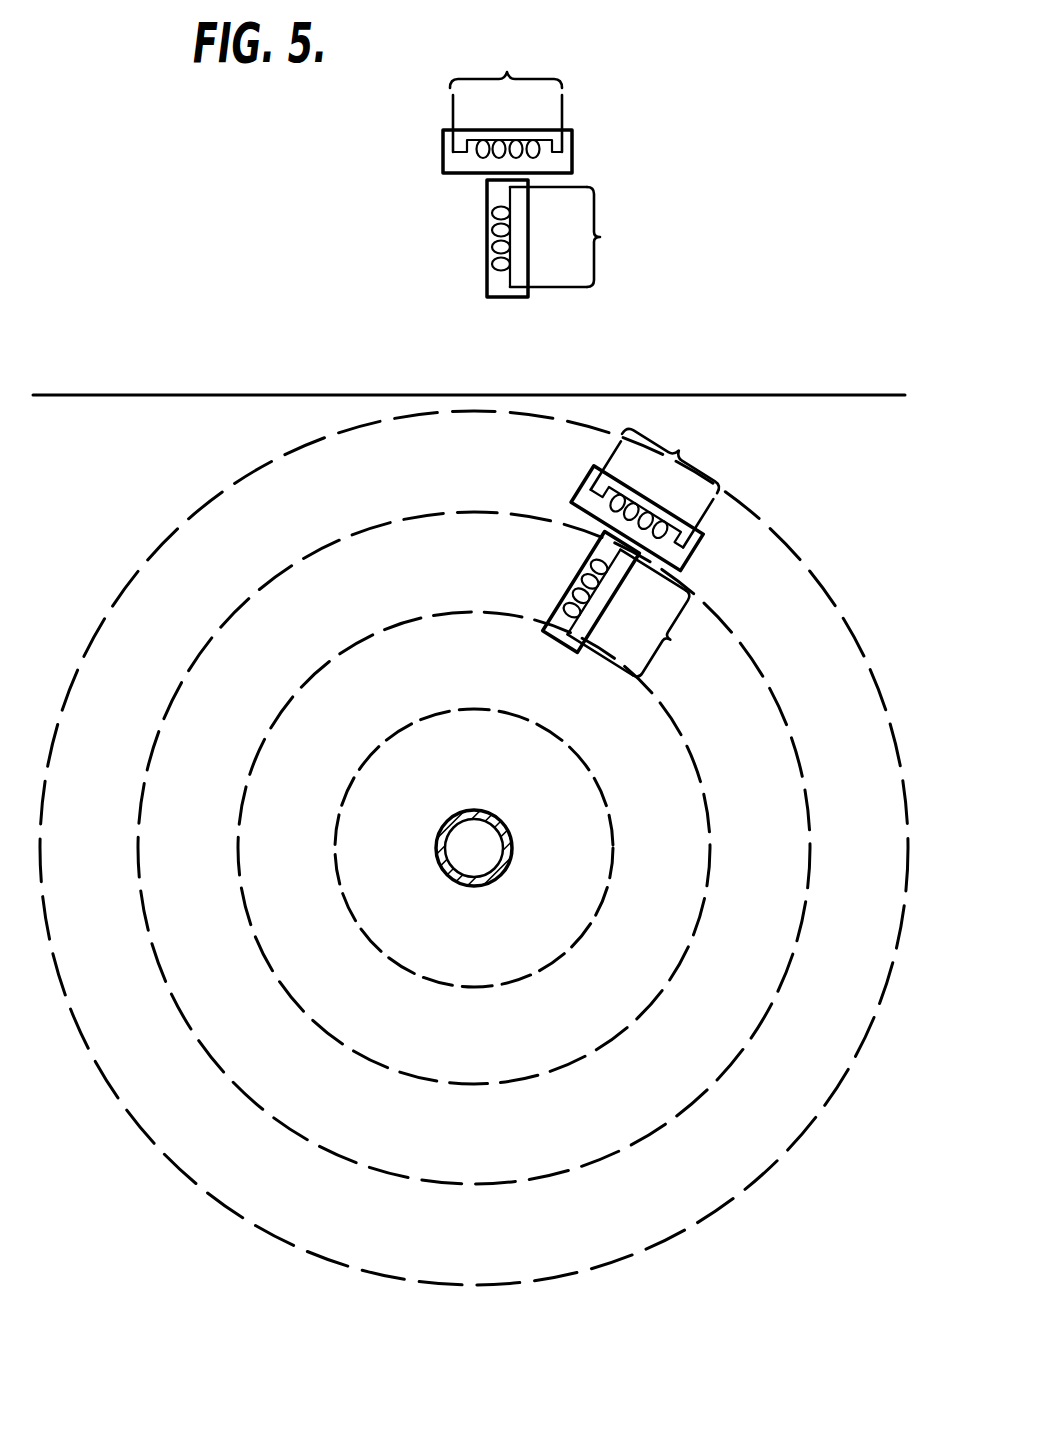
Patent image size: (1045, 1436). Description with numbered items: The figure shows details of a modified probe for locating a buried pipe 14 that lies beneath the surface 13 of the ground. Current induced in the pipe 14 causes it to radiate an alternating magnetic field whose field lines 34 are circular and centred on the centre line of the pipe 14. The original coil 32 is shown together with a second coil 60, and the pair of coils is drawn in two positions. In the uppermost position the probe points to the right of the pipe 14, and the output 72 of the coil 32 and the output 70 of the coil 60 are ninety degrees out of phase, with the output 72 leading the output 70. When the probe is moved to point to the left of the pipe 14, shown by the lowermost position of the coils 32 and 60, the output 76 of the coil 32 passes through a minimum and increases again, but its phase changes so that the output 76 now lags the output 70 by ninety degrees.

The surface of the ground 13 is at (240, 395).
The buried pipe 14 is at (512, 847).
The coil 32 is at (493, 237).
The magnetic field lines 34 is at (720, 1208).
The second coil 60 is at (480, 152).
The output of the coil 60 70 is at (509, 62).
The output of the coil 32 72 is at (612, 237).
The output of the coil 32 76 is at (674, 648).